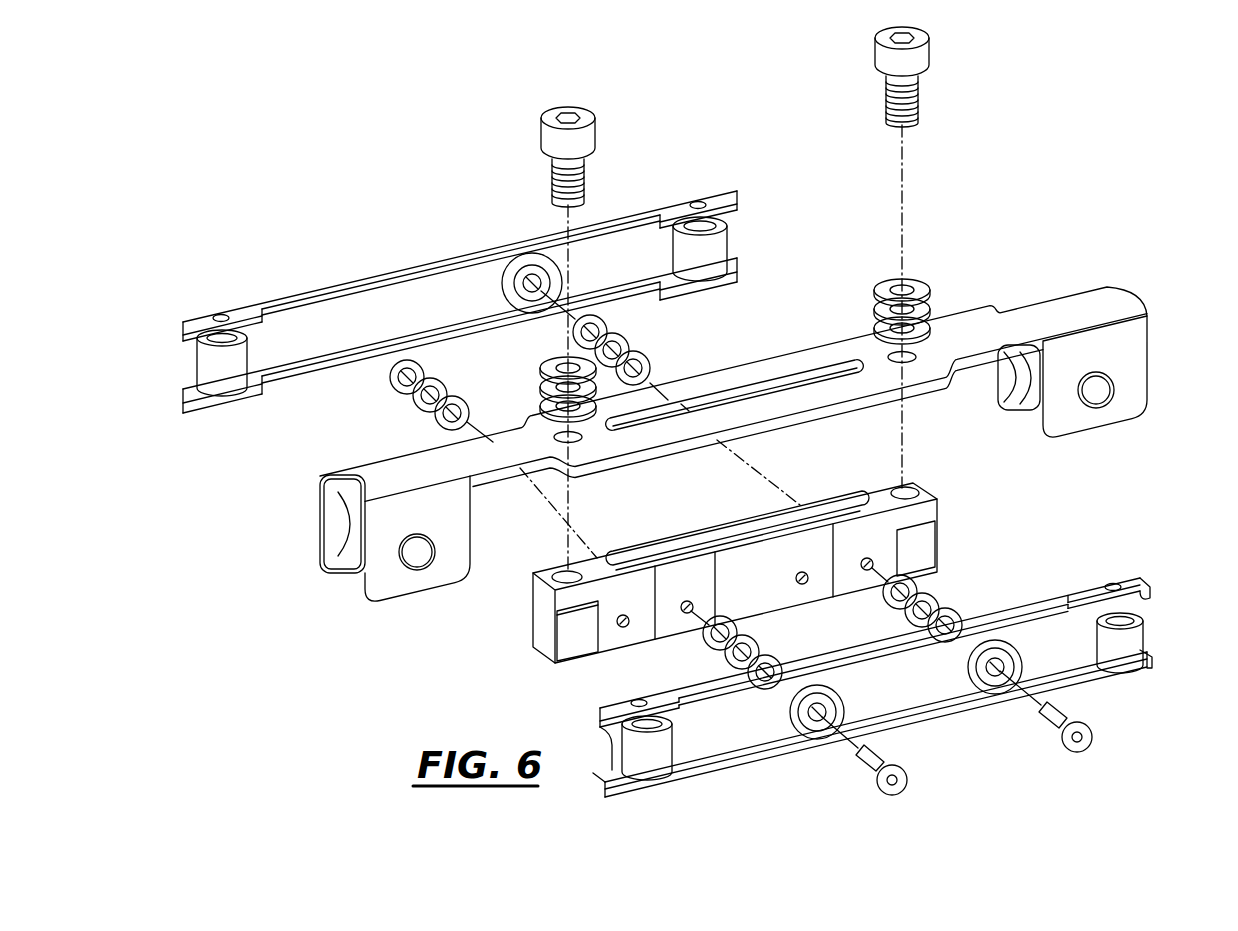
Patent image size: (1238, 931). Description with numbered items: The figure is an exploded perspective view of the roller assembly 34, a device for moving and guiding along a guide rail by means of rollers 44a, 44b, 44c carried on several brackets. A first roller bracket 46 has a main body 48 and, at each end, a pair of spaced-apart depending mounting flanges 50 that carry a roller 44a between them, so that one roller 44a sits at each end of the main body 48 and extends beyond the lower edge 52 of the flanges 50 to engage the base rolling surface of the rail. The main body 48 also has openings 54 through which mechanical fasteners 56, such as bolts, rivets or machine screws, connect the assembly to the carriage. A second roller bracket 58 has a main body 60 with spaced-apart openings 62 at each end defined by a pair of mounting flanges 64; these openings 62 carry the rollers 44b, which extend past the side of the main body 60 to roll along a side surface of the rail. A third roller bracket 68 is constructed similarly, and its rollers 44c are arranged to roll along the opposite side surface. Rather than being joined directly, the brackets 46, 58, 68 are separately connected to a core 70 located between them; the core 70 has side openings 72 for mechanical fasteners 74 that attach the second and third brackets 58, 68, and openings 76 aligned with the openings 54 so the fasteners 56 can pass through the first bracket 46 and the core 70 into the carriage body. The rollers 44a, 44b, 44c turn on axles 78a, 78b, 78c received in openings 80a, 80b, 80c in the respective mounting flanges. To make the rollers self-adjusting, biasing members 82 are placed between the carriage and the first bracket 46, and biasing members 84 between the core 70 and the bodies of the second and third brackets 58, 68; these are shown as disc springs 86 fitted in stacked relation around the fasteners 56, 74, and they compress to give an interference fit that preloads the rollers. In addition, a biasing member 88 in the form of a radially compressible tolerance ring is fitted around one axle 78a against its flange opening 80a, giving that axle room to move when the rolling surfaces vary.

The roller assembly 34 is at (153, 265).
The roller 44a is at (350, 520).
The roller 44b is at (661, 745).
The roller 44c is at (208, 373).
The first roller bracket 46 is at (976, 332).
The main body 48 is at (835, 342).
The mounting flanges 50 is at (346, 551).
The lower edge 52 is at (389, 603).
The openings 54 is at (571, 441).
The mechanical fasteners 56 is at (594, 132).
The second roller bracket 58 is at (732, 751).
The main body 60 is at (925, 701).
The openings 62 is at (617, 737).
The mounting flanges 64 is at (606, 782).
The third roller bracket 68 is at (301, 285).
The core 70 is at (765, 553).
The side openings 72 is at (691, 607).
The mechanical fasteners 74 is at (906, 782).
The openings 76 is at (562, 570).
The axle 78a is at (419, 557).
The axle 78b is at (637, 700).
The axle 78c is at (221, 313).
The opening 80a is at (1113, 388).
The opening 80b is at (1113, 583).
The opening 80c is at (699, 200).
The biasing members 82 is at (531, 351).
The biasing members 84 is at (388, 408).
The disc springs 86 is at (452, 396).
The biasing member 88 is at (431, 540).